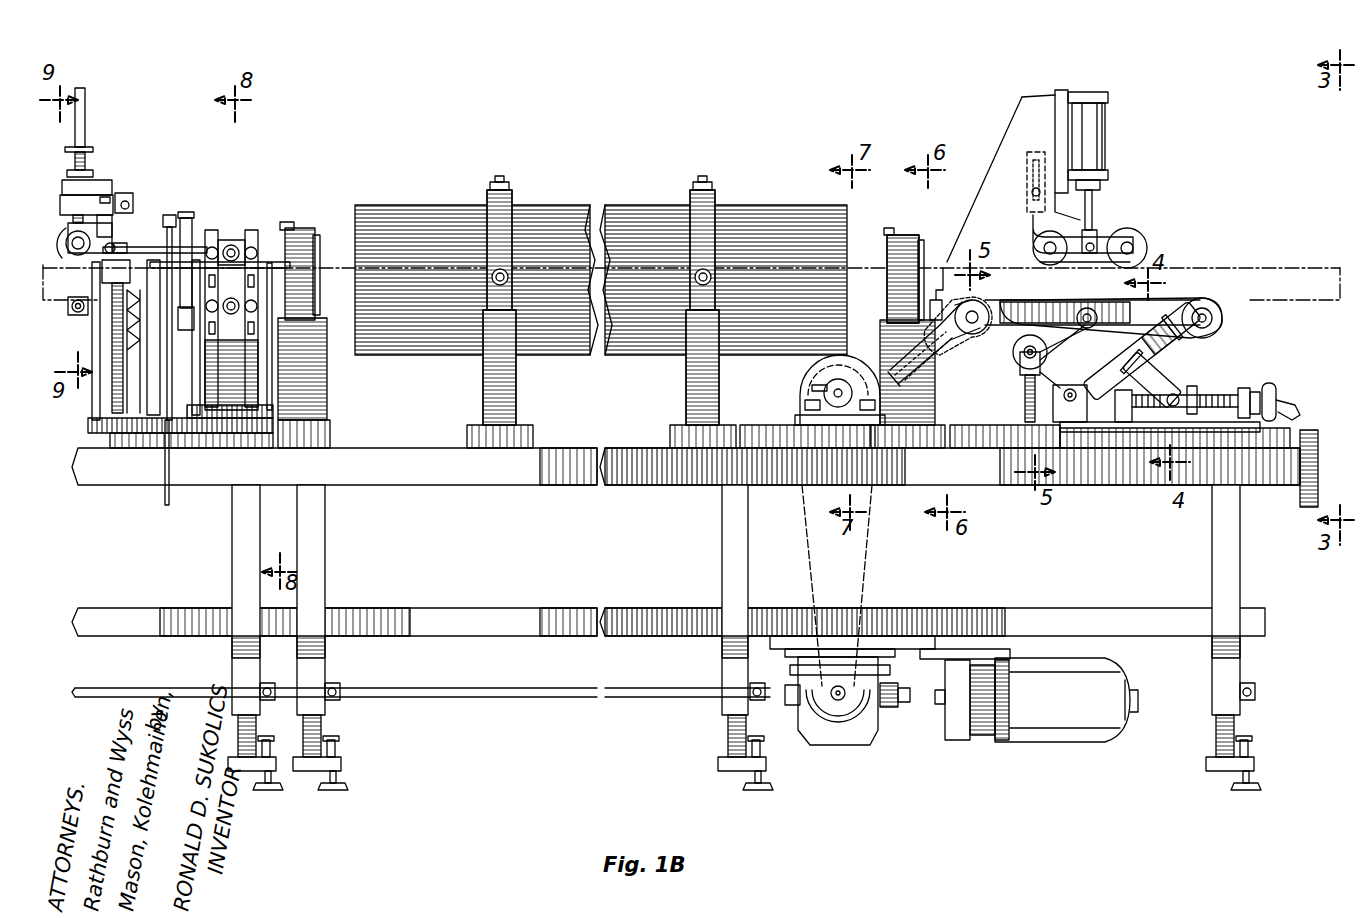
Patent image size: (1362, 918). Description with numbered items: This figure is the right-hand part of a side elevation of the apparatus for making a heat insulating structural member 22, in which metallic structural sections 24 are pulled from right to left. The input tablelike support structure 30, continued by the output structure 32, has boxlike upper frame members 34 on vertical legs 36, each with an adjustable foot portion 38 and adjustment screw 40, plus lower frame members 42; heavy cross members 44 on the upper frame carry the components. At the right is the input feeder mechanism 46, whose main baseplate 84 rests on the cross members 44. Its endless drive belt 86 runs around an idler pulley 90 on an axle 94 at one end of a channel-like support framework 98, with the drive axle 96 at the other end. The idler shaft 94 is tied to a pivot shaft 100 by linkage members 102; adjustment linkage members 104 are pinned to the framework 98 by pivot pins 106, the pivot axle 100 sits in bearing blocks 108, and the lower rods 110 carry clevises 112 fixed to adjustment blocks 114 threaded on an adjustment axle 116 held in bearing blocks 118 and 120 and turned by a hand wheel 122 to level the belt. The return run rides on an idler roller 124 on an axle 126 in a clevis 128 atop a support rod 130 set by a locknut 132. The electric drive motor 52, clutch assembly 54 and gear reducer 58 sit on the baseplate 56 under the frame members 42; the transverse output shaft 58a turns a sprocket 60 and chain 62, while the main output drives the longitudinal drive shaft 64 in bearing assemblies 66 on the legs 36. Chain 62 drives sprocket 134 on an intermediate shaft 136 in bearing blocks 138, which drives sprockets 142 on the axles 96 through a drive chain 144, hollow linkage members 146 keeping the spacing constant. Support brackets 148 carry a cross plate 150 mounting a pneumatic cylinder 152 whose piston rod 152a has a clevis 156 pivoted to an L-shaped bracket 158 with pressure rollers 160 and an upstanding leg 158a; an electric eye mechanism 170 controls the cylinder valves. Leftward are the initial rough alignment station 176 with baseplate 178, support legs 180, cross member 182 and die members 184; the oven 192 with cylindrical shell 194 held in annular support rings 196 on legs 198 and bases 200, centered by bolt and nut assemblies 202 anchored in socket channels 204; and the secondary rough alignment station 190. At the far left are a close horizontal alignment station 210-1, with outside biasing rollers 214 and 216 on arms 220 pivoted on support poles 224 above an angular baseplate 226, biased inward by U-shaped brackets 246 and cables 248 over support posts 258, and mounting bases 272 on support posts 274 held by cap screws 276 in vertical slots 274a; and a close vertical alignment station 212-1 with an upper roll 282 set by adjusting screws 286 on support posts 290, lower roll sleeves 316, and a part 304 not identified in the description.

The structural member 22 is at (1295, 262).
The elongated metallic structural section 24 is at (1330, 290).
The tablelike support structure 30 is at (578, 582).
The tablelike support structure 32 is at (190, 595).
The upper frame member 34 is at (100, 488).
The vertical leg 36 is at (232, 548).
The lower foot portion 38 is at (258, 716).
The adjustment screw 40 is at (275, 778).
The longitudinal frame member 42 is at (120, 628).
The cross member 44 is at (148, 460).
The input feeder mechanism 46 is at (1238, 157).
The electric drive motor 52 is at (1060, 742).
The clutch assembly 54 is at (958, 740).
The baseplate 56 is at (900, 640).
The gear reducer 58 is at (810, 740).
The transverse output shaft 58a is at (840, 700).
The sprocket 60 is at (825, 660).
The chain 62 is at (860, 595).
The longitudinal drive shaft 64 is at (470, 712).
The transverse bearing assembly 66 is at (260, 678).
The main baseplate 84 is at (1262, 428).
The endless drive belt 86 is at (1175, 300).
The idler pulley 90 is at (1192, 300).
The axle 94 is at (1222, 320).
The axle 96 is at (985, 300).
The channel-like support framework 98 is at (1145, 318).
The pivot shaft 100 is at (1072, 390).
The linkage member 102 is at (1208, 335).
The adjustment linkage member 104 is at (1097, 325).
The pivot pin 106 is at (1087, 308).
The bearing block 108 is at (1060, 448).
The rod 110 is at (1150, 360).
The clevis 112 is at (1172, 395).
The adjustment block 114 is at (1200, 392).
The threaded adjustment axle 116 is at (1256, 390).
The bearing block 118 is at (1120, 425).
The bearing block 120 is at (1270, 385).
The hand wheel 122 is at (1290, 408).
The idler roller 124 is at (1020, 355).
The axle 126 is at (1035, 322).
The clevis 128 is at (1022, 372).
The adjustment support rod 130 is at (1025, 392).
The locknut 132 is at (1020, 420).
The sprocket 134 is at (810, 368).
The intermediate shaft 136 is at (830, 392).
The bearing block 138 is at (815, 395).
The sprocket 142 is at (932, 355).
The drive chain 144 is at (895, 370).
The hollow linkage member 146 is at (922, 300).
The upstanding support bracket 148 is at (965, 220).
The cross plate 150 is at (1060, 90).
The pneumatic cylinder 152 is at (1110, 112).
The piston rod 152a is at (1100, 195).
The clevis 156 is at (1094, 220).
The L-shaped roller support bracket 158 is at (1100, 250).
The upstanding leg 158a is at (1020, 140).
The pressure roller 160 is at (1032, 250).
The electric eye mechanism 170 is at (936, 290).
The initial rough alignment station 176 is at (872, 220).
The baseplate 178 is at (330, 428).
The upstanding support leg 180 is at (330, 402).
The cross member 182 is at (312, 232).
The die member 184 is at (318, 250).
The secondary rough alignment station 190 is at (322, 220).
The oven 192 is at (622, 160).
The cylindrical outer shell 194 is at (580, 235).
The annular support ring 196 is at (490, 192).
The upstanding leg 198 is at (506, 380).
The base 200 is at (527, 430).
The centering bolt and nut assembly 202 is at (500, 192).
The socket channel 204 is at (434, 215).
The close horizontal alignment station 210-1 is at (305, 150).
The close vertical alignment station 212-1 is at (123, 118).
The outside biasing roller 214 is at (190, 247).
The outside biasing roller 216 is at (152, 300).
The arm 220 is at (135, 270).
The upstanding support pole 224 is at (92, 392).
The angular baseplate 226 is at (185, 440).
The U-shaped biasing puller bracket 246 is at (186, 212).
The cable 248 is at (160, 495).
The vertical support post 258 is at (150, 395).
The rectangular mounting base 272 is at (270, 288).
The upstanding support post 274 is at (222, 420).
The vertical slot 274a is at (262, 240).
The cap screw 276 is at (258, 240).
The upper roll 282 is at (60, 245).
The adjusting screw 286 is at (88, 152).
The upstanding support post 290 is at (100, 272).
The housing 304 is at (98, 182).
The sleeve 316 is at (68, 310).